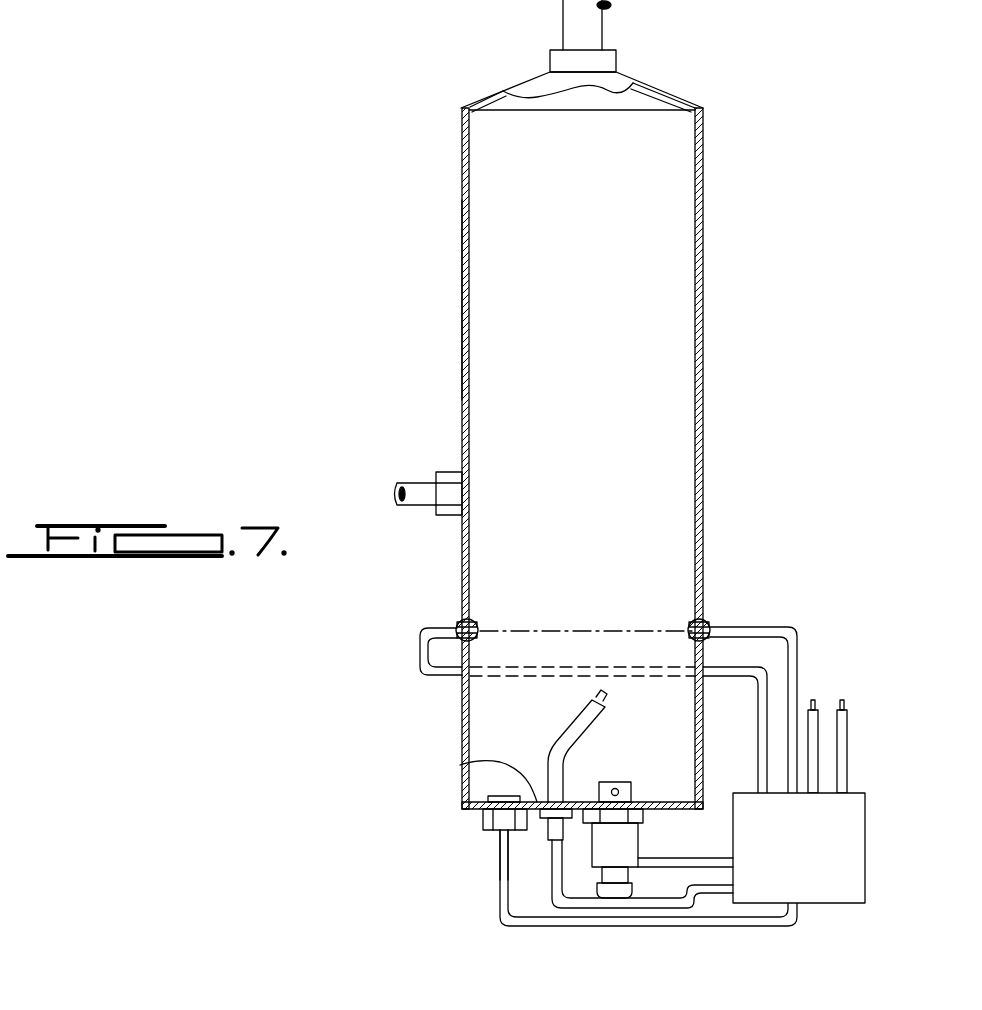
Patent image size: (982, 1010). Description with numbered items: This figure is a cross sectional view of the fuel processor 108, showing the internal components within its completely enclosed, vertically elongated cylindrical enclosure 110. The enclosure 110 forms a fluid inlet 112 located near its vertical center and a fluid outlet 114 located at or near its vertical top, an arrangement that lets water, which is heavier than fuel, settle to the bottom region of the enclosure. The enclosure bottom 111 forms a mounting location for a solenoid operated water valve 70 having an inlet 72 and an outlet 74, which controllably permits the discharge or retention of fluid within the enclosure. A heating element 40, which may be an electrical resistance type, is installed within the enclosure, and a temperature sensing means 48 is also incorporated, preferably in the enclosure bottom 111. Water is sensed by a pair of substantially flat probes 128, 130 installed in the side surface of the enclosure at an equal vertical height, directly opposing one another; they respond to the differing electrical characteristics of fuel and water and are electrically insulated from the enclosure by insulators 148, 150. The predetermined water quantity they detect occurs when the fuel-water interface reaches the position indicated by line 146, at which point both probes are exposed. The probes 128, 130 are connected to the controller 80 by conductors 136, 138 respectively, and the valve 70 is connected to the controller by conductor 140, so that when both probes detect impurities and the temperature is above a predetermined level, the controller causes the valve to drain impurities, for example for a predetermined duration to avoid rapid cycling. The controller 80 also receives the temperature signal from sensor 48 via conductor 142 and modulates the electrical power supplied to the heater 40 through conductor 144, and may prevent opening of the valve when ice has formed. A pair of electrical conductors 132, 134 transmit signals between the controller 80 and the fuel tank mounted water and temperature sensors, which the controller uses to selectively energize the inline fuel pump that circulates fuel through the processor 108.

The fuel processor 108 is at (460, 382).
The cylindrical enclosure 110 is at (462, 296).
The fluid outlet 114 is at (588, 25).
The fluid inlet 112 is at (416, 483).
The flat probe 128 is at (457, 625).
The flat probe 130 is at (712, 624).
The conductor 136 is at (455, 668).
The insulator 148 is at (455, 640).
The interface line 146 is at (596, 628).
The conductor 138 is at (797, 660).
The insulator 150 is at (704, 648).
The electrical conductor 134 is at (816, 712).
The electrical conductor 132 is at (845, 722).
The controller 80 is at (745, 795).
The heating element 40 is at (580, 720).
The inlet 72 is at (621, 780).
The enclosure bottom 111 is at (460, 762).
The temperature sensing means 48 is at (483, 815).
The conductor 142 is at (500, 843).
The conductor 144 is at (552, 858).
The solenoid operated water valve 70 is at (620, 855).
The outlet 74 is at (600, 897).
The conductor 140 is at (665, 857).